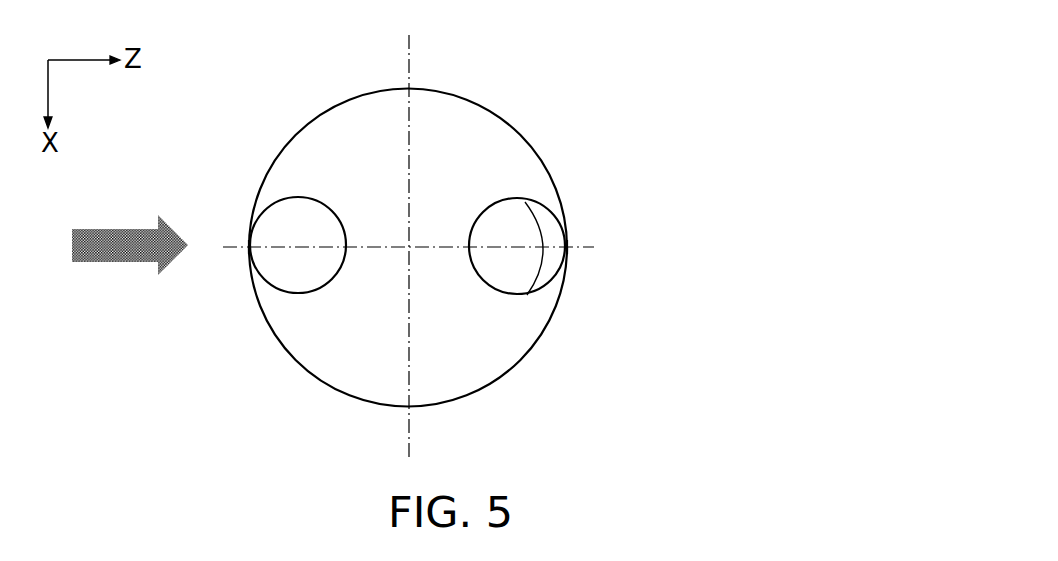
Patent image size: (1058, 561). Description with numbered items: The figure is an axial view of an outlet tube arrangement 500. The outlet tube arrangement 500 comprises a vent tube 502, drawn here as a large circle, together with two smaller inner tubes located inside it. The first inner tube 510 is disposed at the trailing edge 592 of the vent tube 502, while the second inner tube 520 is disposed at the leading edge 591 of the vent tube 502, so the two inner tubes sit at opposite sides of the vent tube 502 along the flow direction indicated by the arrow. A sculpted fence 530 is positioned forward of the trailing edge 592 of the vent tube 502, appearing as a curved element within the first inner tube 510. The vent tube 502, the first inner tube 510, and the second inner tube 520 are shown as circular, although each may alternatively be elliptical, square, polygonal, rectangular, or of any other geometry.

The outlet tube arrangement 500 is at (662, 90).
The vent tube 502 is at (525, 132).
The inner tube 510 is at (520, 297).
The inner tube 520 is at (295, 193).
The sculpted fence 530 is at (550, 235).
The leading edge 591 is at (248, 245).
The trailing edge 592 is at (568, 248).